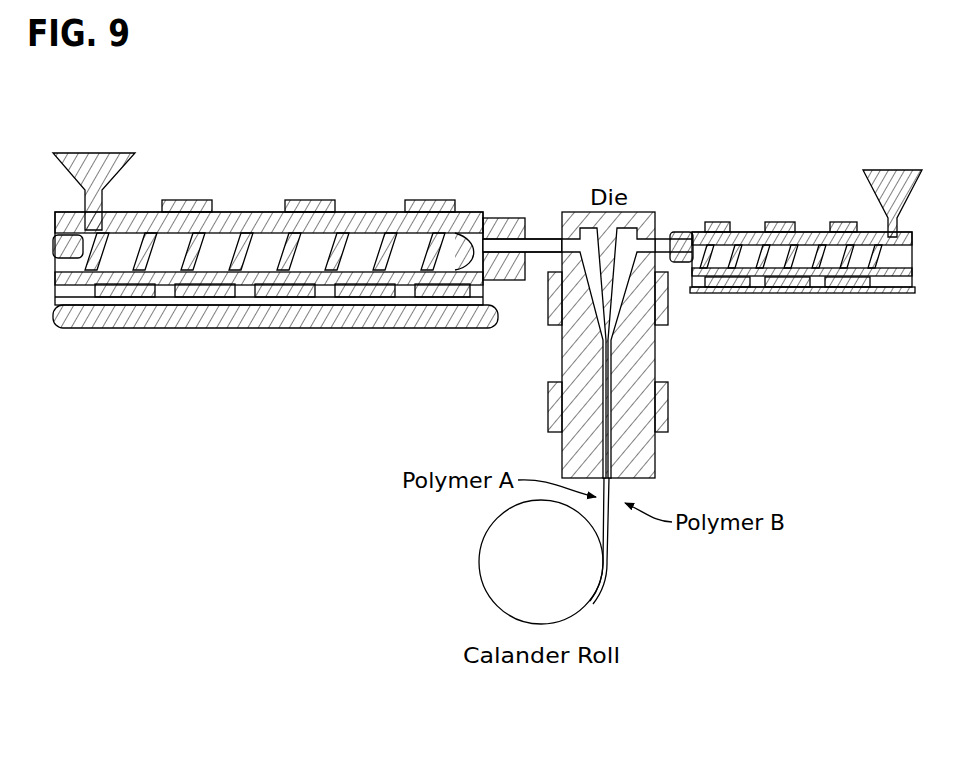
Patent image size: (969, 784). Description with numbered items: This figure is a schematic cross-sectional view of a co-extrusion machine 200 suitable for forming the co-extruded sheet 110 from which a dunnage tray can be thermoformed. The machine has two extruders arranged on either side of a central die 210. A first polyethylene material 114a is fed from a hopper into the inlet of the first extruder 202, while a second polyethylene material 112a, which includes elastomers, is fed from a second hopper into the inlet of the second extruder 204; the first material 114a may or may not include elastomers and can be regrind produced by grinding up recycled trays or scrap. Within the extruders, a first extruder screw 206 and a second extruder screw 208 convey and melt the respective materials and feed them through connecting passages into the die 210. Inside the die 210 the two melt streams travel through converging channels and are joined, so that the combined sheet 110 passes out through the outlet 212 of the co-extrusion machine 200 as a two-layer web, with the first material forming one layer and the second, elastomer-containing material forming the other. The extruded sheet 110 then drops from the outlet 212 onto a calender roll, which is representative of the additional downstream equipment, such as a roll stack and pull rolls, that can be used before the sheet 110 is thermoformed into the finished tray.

The co-extrusion machine 200 is at (222, 112).
The first polyethylene material 114a is at (94, 147).
The second polyethylene material 112a is at (892, 161).
The second extruder screw 208 is at (191, 287).
The second extruder 204 is at (220, 320).
The first extruder screw 206 is at (777, 277).
The first extruder 202 is at (855, 275).
The die 210 is at (577, 418).
The outlet 212 is at (612, 477).
The sheet 110 is at (605, 525).